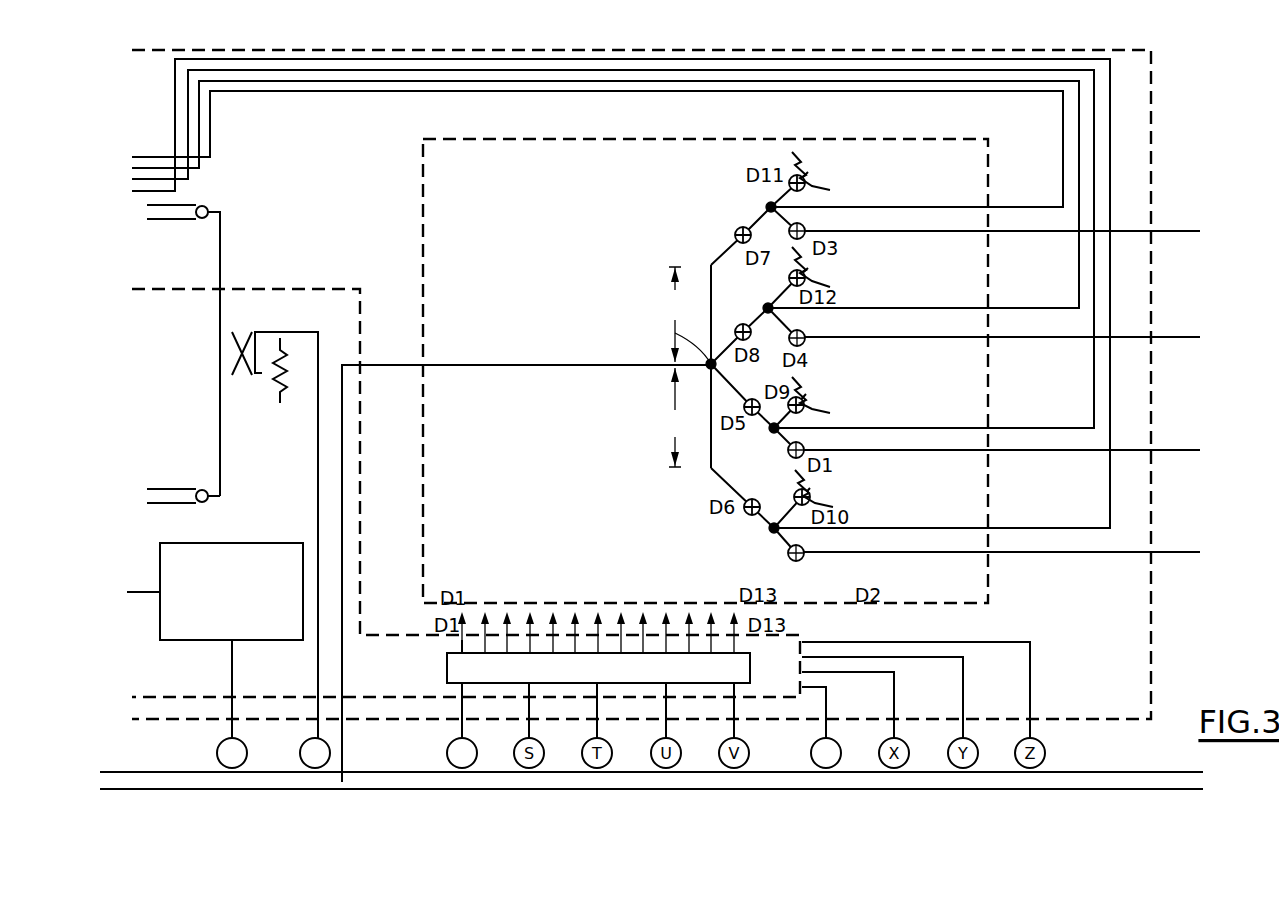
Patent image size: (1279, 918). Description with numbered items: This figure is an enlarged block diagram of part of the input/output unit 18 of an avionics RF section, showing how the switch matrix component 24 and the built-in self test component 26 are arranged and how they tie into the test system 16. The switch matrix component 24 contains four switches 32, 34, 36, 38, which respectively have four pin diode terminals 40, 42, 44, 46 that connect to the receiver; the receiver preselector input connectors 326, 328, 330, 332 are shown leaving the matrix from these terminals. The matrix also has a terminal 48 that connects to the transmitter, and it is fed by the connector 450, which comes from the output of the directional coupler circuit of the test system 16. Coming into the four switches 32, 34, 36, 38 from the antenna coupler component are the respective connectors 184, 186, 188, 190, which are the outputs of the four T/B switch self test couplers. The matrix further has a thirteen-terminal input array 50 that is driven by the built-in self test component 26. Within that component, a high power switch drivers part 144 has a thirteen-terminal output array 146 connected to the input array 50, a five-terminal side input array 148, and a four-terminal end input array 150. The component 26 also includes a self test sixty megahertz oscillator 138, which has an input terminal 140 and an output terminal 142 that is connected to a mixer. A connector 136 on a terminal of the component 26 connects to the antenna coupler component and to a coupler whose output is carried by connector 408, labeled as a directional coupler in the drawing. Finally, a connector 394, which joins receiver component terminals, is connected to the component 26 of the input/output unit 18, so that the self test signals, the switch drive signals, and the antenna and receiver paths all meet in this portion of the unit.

The input/output unit 18 is at (481, 50).
The switch matrix component 24 is at (805, 160).
The built-in self test (BITE) component 26 is at (237, 289).
The test system 16 is at (293, 320).
The switch 32 is at (770, 529).
The switch 34 is at (770, 432).
The switch 36 is at (767, 305).
The switch 38 is at (766, 206).
The pin diode terminal 40 is at (805, 549).
The pin diode terminal 42 is at (805, 447).
The pin diode terminal 44 is at (806, 335).
The pin diode terminal 46 is at (806, 229).
The terminal 48 is at (711, 365).
The thirteen-terminal input array 50 is at (465, 618).
The connector 136 is at (221, 490).
The self test 60 MHZ oscillator 138 is at (205, 543).
The input terminal 140 is at (232, 690).
The output terminal 142 is at (158, 595).
The high power switch drivers part 144 is at (447, 678).
The thirteen-terminal output array 146 is at (462, 640).
The five-terminal side input array 148 is at (462, 708).
The four-terminal end input array 150 is at (826, 695).
The connector 184 is at (188, 58).
The connector 186 is at (318, 72).
The connector 188 is at (290, 82).
The connector 190 is at (222, 93).
The connector 326 is at (1004, 552).
The connector 328 is at (1022, 450).
The connector 330 is at (1022, 337).
The connector 332 is at (1012, 231).
The connector 394 is at (1066, 772).
The connector 408 is at (221, 250).
The connector 450 is at (445, 365).